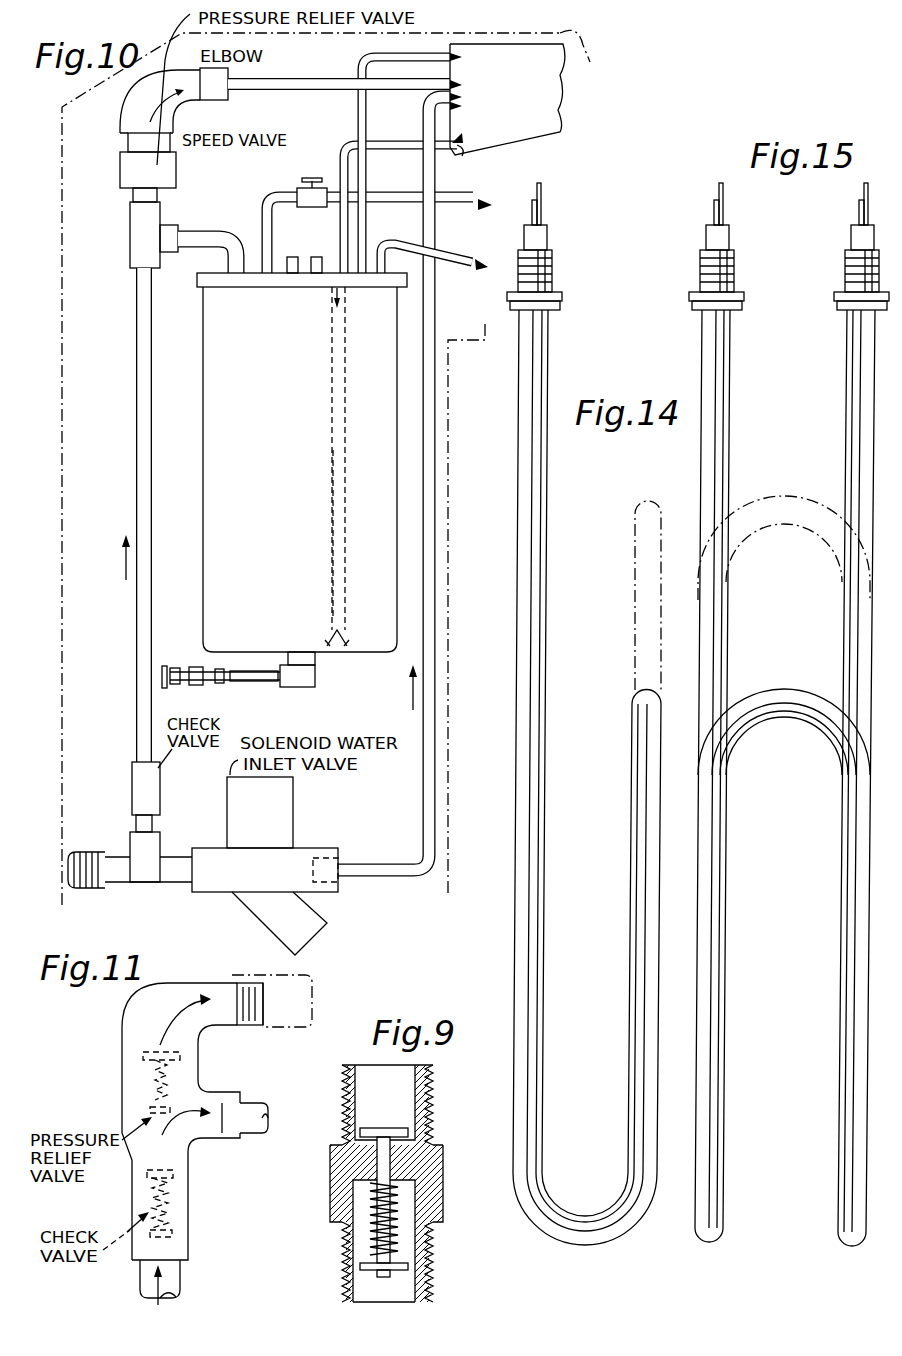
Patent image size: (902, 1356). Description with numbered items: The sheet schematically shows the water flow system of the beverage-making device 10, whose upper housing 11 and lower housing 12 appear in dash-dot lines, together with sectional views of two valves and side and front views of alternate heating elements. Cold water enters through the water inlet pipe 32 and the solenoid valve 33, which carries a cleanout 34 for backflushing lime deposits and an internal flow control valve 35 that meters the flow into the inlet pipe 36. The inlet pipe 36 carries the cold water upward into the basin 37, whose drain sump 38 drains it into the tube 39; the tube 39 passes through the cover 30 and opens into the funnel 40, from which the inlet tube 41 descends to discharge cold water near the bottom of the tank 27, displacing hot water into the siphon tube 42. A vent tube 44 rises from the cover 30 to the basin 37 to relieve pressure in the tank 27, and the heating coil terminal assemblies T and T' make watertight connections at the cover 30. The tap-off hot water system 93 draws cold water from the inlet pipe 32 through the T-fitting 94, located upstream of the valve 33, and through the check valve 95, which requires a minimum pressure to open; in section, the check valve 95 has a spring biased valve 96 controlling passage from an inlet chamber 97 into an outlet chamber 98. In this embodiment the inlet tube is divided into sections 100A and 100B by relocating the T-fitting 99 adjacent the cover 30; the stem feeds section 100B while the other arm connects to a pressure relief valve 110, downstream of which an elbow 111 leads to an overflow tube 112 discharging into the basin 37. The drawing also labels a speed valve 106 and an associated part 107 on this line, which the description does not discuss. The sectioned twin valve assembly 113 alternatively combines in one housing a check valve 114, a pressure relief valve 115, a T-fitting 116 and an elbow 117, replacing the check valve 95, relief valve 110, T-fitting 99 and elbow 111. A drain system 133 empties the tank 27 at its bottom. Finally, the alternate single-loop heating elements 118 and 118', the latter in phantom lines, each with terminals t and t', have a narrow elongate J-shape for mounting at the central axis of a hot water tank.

In FIG. 10, the beverage-making device 10 is at (60, 582).
In FIG. 10, the upper housing 11 is at (588, 52).
In FIG. 10, the lower housing 12 is at (450, 496).
In FIG. 10, the hot water container 27 is at (253, 470).
In FIG. 10, the cover 30 is at (228, 290).
In FIG. 10, the water inlet pipe 32 is at (95, 888).
In FIG. 10, the solenoid valve 33 is at (295, 817).
In FIG. 10, the cleanout 34 is at (312, 917).
In FIG. 10, the internal flow control valve 35 is at (328, 858).
In FIG. 10, the inlet pipe 36 is at (430, 552).
In FIG. 10, the basin 37 is at (542, 108).
In FIG. 10, the drain sump 38 is at (470, 153).
In FIG. 10, the tube 39 is at (395, 142).
In FIG. 10, the funnel 40 is at (325, 298).
In FIG. 10, the inlet tube 41 is at (330, 540).
In FIG. 10, the siphon tube 42 is at (462, 258).
In FIG. 10, the vent tube 44 is at (360, 108).
In FIG. 10, the tap-off hot water system 93 is at (239, 213).
In FIG. 10, the T-fitting 94 is at (140, 838).
In FIG. 10, the check valve 95 is at (160, 782).
In FIG. 9, the check valve 95 is at (330, 1210).
In FIG. 9, the spring biased valve 96 is at (397, 1205).
In FIG. 9, the inlet chamber 97 is at (405, 1285).
In FIG. 9, the outlet chamber 98 is at (398, 1087).
In FIG. 10, the T-fitting 99 is at (130, 242).
In FIG. 10, the inlet tube section 100A is at (136, 382).
In FIG. 11, the inlet tube section 100A is at (180, 1280).
In FIG. 10, the inlet tube section 100B is at (190, 232).
In FIG. 11, the inlet tube section 100B is at (257, 1112).
In FIG. 10, the speed valve body 106 is at (297, 185).
In FIG. 10, the speed valve handle 107 is at (310, 176).
In FIG. 10, the pressure relief valve 110 is at (120, 182).
In FIG. 10, the elbow 111 is at (187, 103).
In FIG. 10, the overflow tube 112 is at (330, 68).
In FIG. 11, the overflow tube 112 is at (268, 1030).
In FIG. 11, the twin valve assembly 113 is at (121, 1062).
In FIG. 11, the check valve 114 is at (146, 1203).
In FIG. 11, the pressure relief valve 115 is at (145, 1092).
In FIG. 11, the T-fitting 116 is at (224, 1138).
In FIG. 11, the elbow 117 is at (207, 982).
In FIG. 14, the heating element 118 is at (587, 777).
In FIG. 15, the heating element 118 is at (785, 778).
In FIG. 14, the heating element 118' is at (613, 595).
In FIG. 15, the heating element 118' is at (784, 525).
In FIG. 10, the drain system 133 is at (296, 690).
In FIG. 10, the terminal assembly T is at (316, 246).
In FIG. 10, the terminal assembly T' is at (290, 247).
In FIG. 14, the terminal t is at (543, 246).
In FIG. 15, the terminal t is at (723, 246).
In FIG. 15, the terminal t' is at (851, 246).